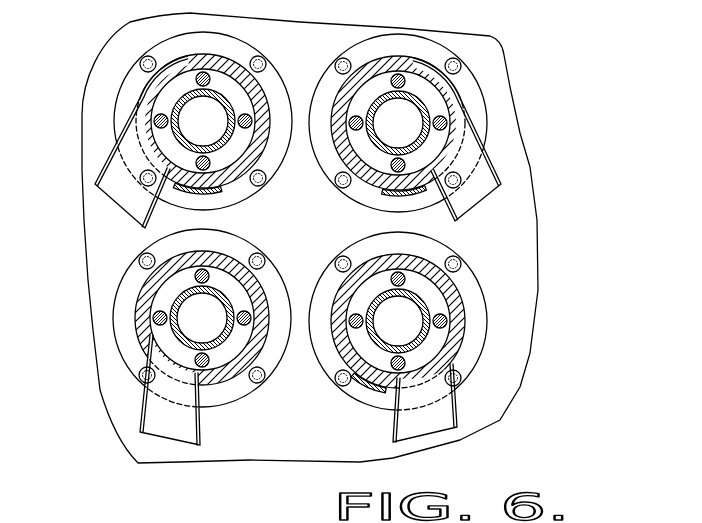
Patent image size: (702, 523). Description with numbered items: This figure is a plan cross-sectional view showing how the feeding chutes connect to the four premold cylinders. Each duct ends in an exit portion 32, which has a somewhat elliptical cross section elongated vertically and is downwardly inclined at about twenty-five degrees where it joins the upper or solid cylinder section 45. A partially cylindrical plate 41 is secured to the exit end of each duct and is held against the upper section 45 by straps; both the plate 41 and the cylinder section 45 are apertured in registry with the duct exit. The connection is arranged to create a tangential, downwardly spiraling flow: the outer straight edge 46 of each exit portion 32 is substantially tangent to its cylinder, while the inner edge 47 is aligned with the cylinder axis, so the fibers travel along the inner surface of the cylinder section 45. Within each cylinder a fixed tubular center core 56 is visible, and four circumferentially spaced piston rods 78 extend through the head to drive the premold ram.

The duct exit portion 32 is at (107, 162).
The partially cylindrical plate 41 is at (212, 195).
The upper cylinder section 45 is at (405, 283).
The outer straight edge 46 is at (463, 336).
The inner edge 47 is at (393, 193).
The center core 56 is at (377, 103).
The piston rods 78 is at (457, 313).